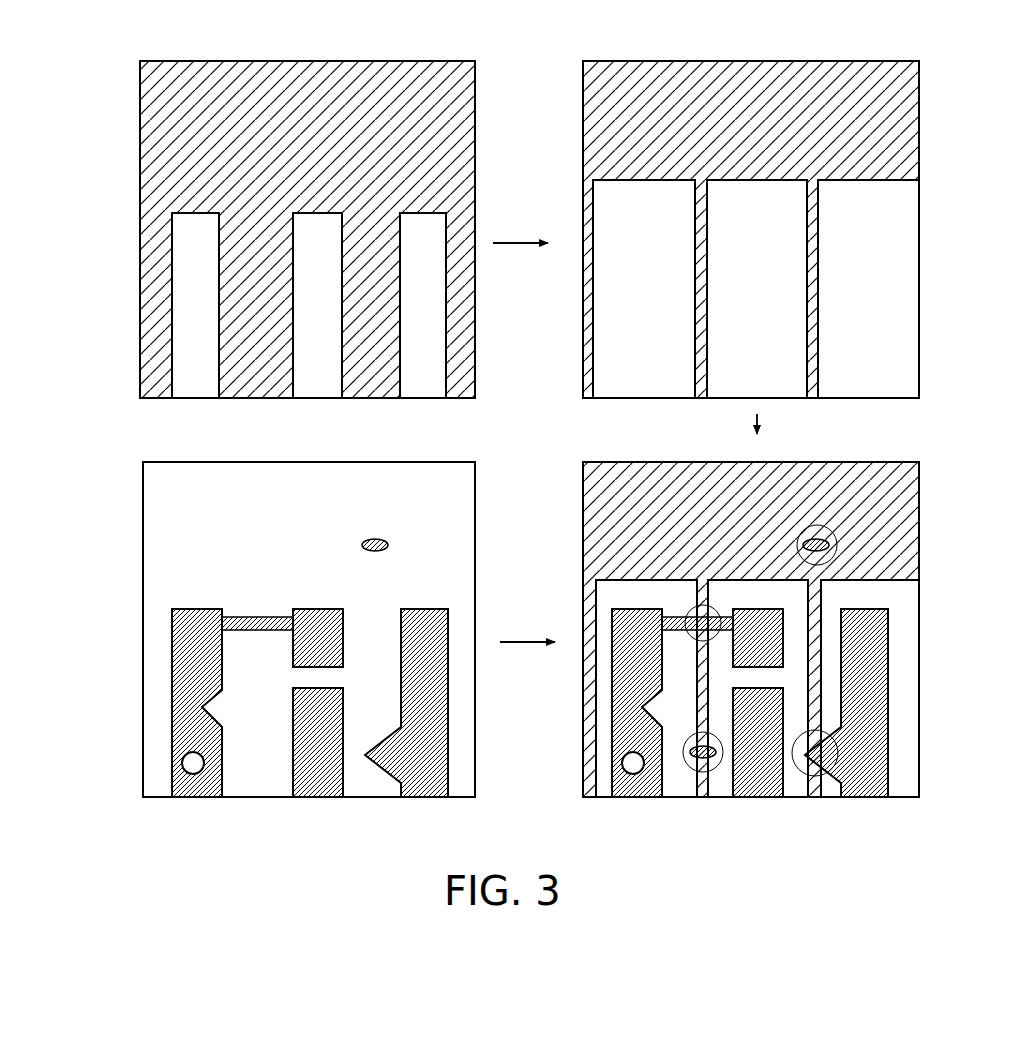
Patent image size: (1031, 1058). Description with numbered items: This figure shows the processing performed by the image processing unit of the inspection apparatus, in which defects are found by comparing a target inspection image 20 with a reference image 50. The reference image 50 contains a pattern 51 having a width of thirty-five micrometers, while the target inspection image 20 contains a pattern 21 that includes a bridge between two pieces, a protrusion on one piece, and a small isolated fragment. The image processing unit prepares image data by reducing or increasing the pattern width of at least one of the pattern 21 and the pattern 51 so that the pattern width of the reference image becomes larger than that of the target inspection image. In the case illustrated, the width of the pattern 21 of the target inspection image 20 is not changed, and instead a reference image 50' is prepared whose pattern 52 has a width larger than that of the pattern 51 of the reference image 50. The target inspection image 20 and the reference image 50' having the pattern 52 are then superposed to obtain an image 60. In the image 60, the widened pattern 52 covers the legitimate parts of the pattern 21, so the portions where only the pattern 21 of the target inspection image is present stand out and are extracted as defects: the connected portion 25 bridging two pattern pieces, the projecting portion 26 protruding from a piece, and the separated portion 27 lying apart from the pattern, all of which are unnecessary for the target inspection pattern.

The reference image 50 is at (243, 229).
The pattern 51 is at (172, 272).
The reference image 50' is at (704, 229).
The pattern 52 is at (622, 180).
The target inspection image 20 is at (143, 552).
The pattern 21 is at (172, 700).
The image 60 is at (583, 515).
The connected portion 25 is at (690, 611).
The separated portion 27 is at (837, 546).
The projecting portion 26 is at (876, 702).